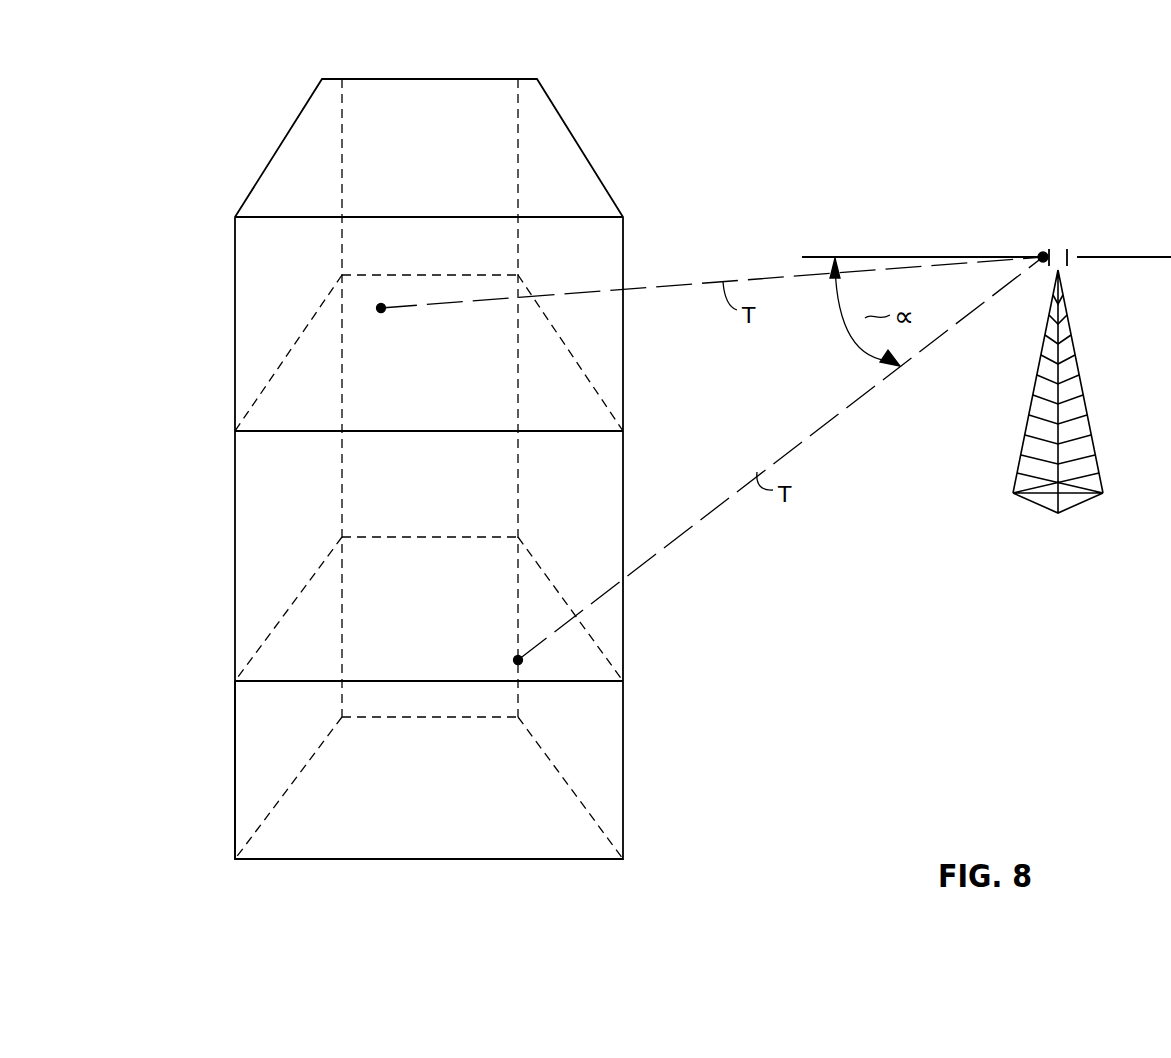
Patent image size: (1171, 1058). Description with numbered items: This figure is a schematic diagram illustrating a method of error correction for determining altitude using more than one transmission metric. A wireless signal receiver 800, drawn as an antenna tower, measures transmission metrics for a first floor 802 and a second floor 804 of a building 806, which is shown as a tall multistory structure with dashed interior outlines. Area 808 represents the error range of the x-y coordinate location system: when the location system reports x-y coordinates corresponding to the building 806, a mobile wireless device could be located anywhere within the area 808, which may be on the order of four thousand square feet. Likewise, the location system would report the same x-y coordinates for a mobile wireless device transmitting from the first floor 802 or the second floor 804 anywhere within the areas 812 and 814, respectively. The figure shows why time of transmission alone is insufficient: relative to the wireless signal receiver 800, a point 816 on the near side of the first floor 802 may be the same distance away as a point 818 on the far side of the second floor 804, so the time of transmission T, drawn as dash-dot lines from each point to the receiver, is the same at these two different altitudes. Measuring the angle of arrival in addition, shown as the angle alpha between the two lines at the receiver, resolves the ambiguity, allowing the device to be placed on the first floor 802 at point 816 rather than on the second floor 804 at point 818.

The wireless signal receiver 800 is at (1060, 266).
The first floor 802 is at (578, 683).
The second floor 804 is at (270, 432).
The building 806 is at (233, 787).
The area 808 is at (353, 840).
The area 812 is at (270, 670).
The area 814 is at (303, 415).
The point 816 is at (515, 661).
The point 818 is at (381, 312).